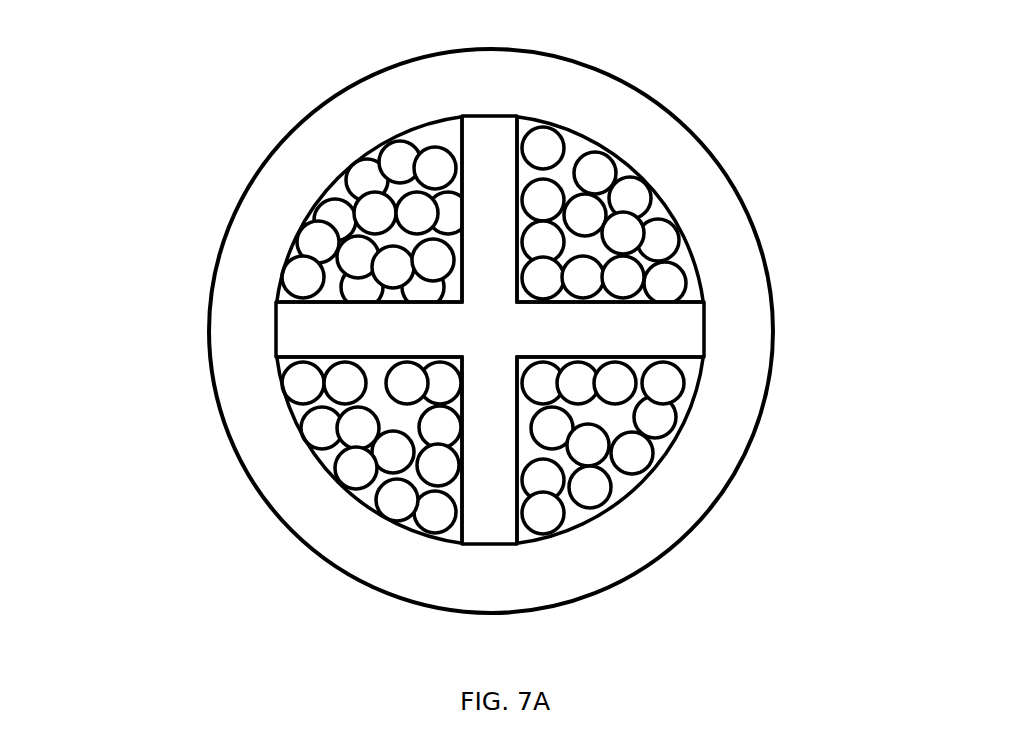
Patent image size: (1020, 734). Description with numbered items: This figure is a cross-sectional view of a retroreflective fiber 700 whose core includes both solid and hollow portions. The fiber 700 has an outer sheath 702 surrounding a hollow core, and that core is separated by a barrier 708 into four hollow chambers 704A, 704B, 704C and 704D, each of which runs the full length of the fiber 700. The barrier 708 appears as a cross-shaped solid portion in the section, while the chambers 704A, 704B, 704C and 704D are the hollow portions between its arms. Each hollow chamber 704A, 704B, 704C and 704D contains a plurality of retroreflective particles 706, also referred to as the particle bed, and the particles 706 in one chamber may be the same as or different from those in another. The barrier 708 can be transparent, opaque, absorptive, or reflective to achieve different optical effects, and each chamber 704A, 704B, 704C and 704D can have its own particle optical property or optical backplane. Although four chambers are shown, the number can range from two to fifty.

The retroreflective fiber 700 is at (190, 232).
The sheath 702 is at (630, 530).
The hollow chamber 704A is at (333, 192).
The hollow chamber 704B is at (657, 213).
The hollow chamber 704C is at (660, 438).
The hollow chamber 704D is at (455, 532).
The retroreflective particles 706 is at (438, 173).
The barrier 708 is at (485, 213).